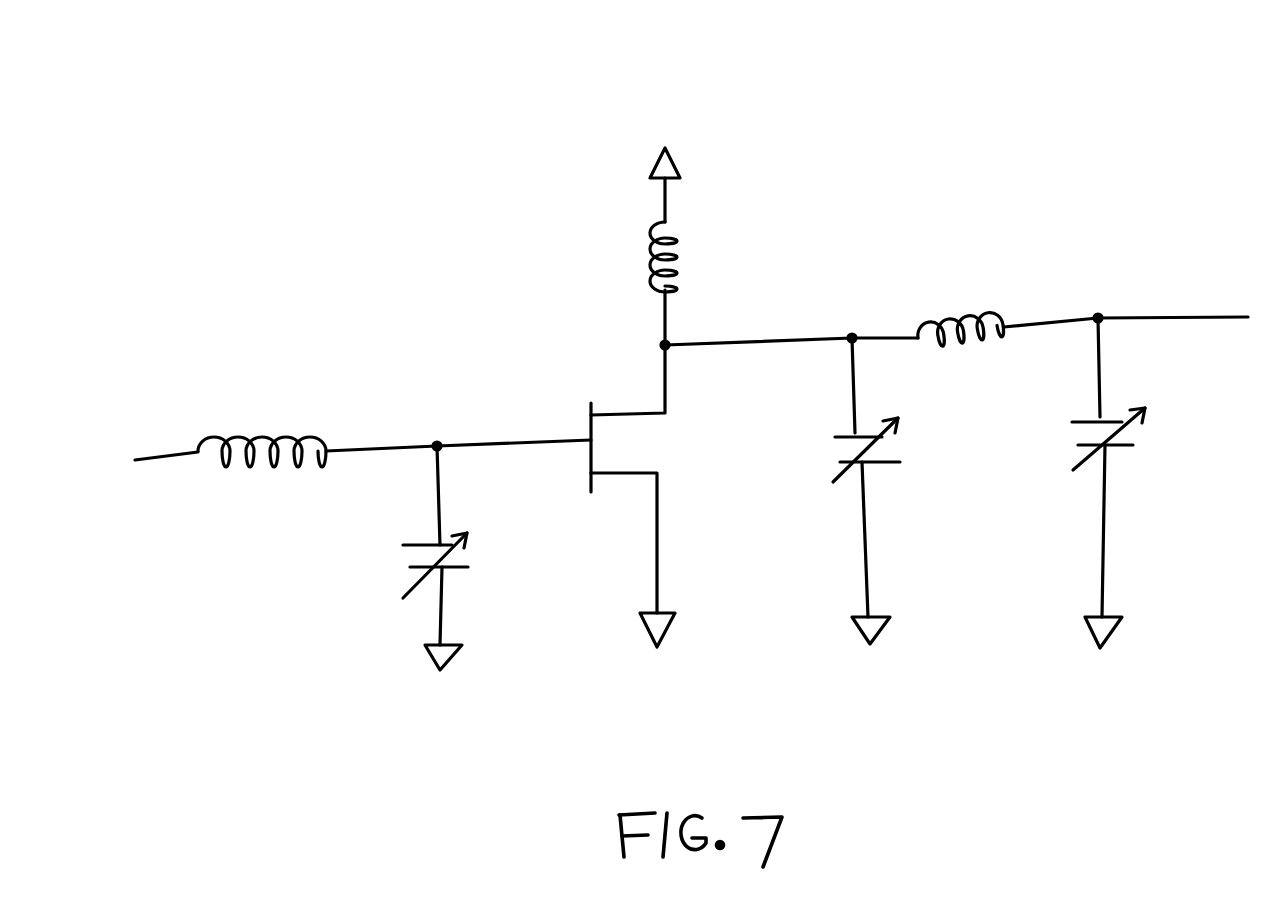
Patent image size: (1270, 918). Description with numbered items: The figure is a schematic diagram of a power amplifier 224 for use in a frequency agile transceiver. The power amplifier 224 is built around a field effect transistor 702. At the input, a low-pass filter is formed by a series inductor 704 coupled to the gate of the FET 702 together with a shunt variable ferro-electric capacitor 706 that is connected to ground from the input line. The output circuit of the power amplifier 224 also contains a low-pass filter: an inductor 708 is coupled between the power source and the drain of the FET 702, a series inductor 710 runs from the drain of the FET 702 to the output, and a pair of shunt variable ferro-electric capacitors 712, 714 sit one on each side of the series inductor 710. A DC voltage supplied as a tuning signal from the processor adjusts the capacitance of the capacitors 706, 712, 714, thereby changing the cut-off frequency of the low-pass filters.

The power amplifier 224 is at (1010, 148).
The field effect transistor 702 is at (588, 423).
The series inductor 704 is at (262, 436).
The shunt variable ferro-electric capacitor 706 is at (462, 558).
The inductor 708 is at (693, 246).
The series inductor 710 is at (928, 312).
The shunt variable ferro-electric capacitor 712 is at (881, 491).
The shunt variable ferro-electric capacitor 714 is at (1124, 483).